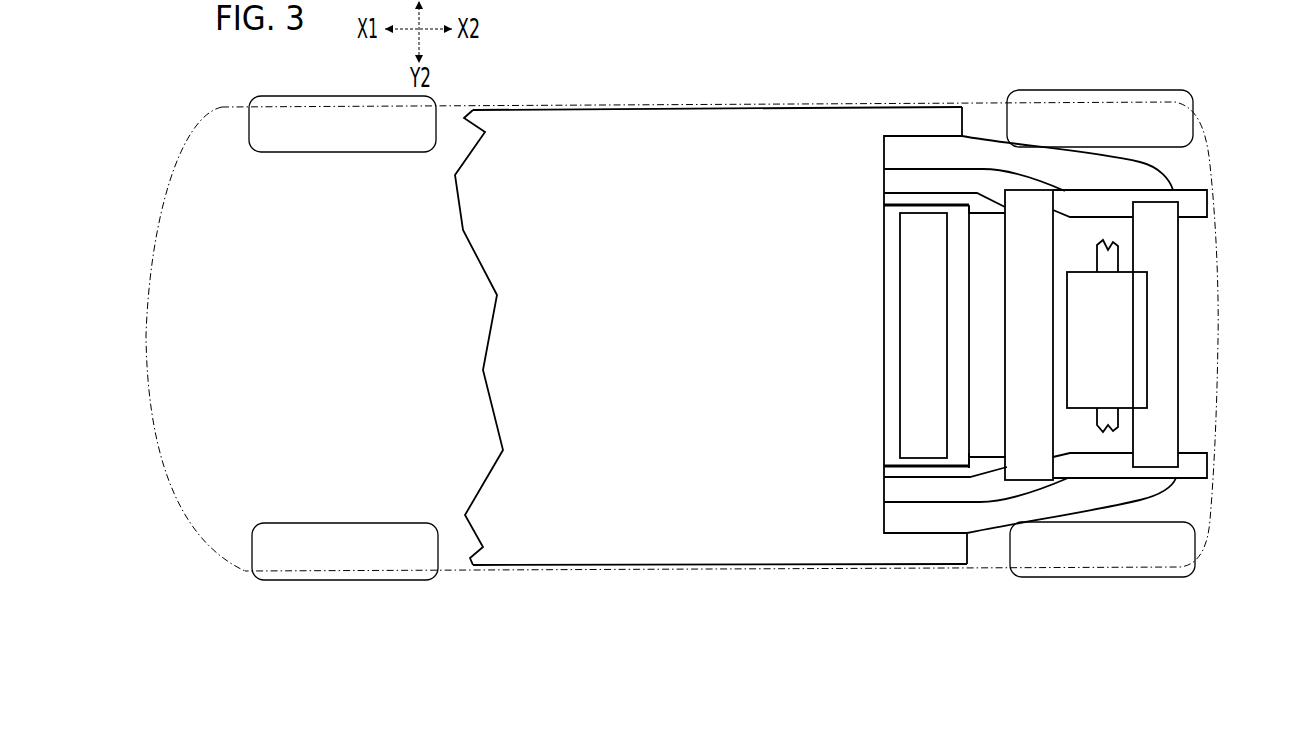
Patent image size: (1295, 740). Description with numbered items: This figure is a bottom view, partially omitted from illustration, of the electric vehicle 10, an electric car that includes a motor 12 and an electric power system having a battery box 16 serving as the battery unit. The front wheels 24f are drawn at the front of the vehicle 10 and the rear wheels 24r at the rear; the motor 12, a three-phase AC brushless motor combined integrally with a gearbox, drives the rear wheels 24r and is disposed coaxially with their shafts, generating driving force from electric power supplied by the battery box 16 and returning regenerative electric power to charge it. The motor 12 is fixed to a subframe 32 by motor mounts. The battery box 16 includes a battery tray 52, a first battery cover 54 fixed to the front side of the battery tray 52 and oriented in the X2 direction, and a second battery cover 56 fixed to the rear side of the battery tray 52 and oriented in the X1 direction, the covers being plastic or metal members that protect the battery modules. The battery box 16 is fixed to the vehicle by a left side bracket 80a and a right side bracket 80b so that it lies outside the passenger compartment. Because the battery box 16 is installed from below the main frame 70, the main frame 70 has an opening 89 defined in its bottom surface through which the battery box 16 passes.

The electric vehicle 10 is at (608, 66).
The motor 12 is at (1130, 363).
The battery box 16 is at (985, 210).
The front wheels 24f is at (325, 155).
The rear wheels 24r is at (1193, 90).
The subframe 32 is at (1168, 311).
The battery tray 52 is at (958, 322).
The first battery cover 54 is at (903, 238).
The second battery cover 56 is at (985, 453).
The main frame 70 is at (719, 105).
The left side bracket 80a is at (912, 205).
The right side bracket 80b is at (920, 467).
The opening 89 is at (890, 374).